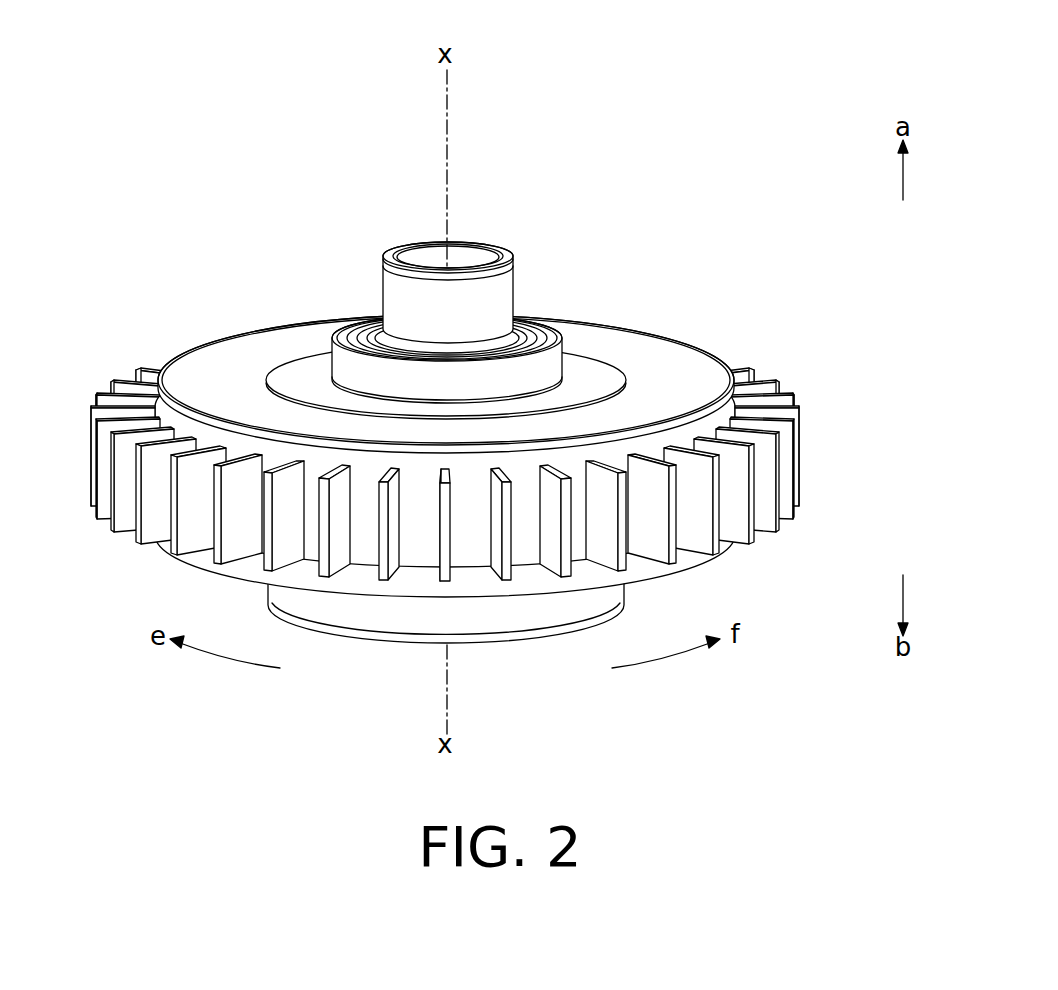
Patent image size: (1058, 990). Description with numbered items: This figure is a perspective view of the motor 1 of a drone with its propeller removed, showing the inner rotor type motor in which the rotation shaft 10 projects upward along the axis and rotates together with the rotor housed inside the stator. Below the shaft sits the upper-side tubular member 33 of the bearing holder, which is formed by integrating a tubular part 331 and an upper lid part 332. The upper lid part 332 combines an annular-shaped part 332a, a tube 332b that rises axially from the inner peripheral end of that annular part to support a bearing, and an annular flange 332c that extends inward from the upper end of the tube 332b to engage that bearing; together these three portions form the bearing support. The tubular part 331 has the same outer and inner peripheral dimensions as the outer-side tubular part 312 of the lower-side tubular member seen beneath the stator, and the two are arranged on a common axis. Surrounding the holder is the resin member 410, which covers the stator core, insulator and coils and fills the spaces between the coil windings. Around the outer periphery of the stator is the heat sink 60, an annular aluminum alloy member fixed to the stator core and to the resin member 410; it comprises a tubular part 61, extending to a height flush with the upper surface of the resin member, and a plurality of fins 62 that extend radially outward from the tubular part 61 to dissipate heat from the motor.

The motor 1 is at (521, 27).
The rotation shaft 10 is at (500, 297).
The resin member 410 is at (680, 358).
The upper-side tubular member 33 is at (375, 261).
The tubular part 331 is at (270, 374).
The upper lid part 332 is at (372, 274).
The annular-shaped part 332a is at (306, 386).
The tube 332b is at (336, 356).
The flange 332c is at (447, 277).
The heat sink 60 is at (445, 554).
The tubular part 61 is at (366, 540).
The fins 62 is at (326, 540).
The outer-side tubular part 312 is at (554, 618).